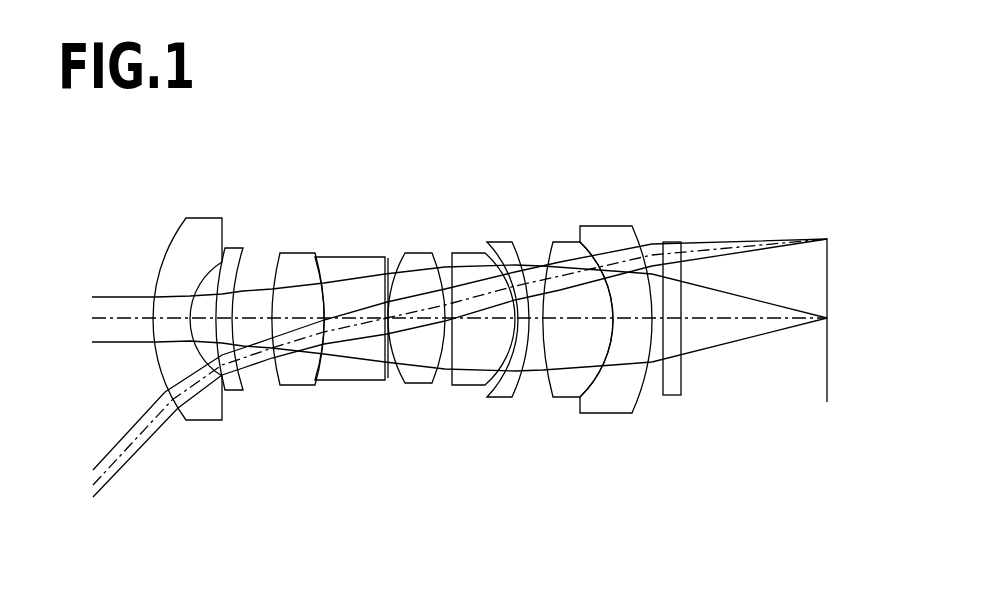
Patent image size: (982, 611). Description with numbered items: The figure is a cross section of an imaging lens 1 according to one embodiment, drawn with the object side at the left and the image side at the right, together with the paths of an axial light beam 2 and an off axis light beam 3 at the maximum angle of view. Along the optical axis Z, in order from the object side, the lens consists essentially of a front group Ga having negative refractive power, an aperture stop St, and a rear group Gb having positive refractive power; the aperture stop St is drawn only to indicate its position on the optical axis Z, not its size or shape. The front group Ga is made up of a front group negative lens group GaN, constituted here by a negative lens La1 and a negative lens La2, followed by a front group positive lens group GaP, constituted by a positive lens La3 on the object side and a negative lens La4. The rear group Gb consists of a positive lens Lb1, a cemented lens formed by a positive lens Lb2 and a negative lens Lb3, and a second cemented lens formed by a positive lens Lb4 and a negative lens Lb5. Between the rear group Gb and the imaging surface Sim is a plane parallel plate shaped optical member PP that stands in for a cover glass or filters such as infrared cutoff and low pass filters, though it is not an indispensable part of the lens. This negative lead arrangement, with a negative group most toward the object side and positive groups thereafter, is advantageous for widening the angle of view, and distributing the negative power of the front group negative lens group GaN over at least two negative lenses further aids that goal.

The imaging lens 1 is at (488, 109).
The axial light beam 2 is at (88, 285).
The off axis light beam 3 is at (88, 460).
The optical axis Z is at (104, 318).
The front group Ga is at (385, 151).
The front group negative lens group GaN is at (245, 186).
The front group positive lens group GaP is at (385, 186).
The rear group Gb is at (653, 151).
The negative lens La1 is at (202, 413).
The negative lens La2 is at (237, 392).
The positive lens La3 is at (297, 387).
The negative lens La4 is at (352, 380).
The positive lens Lb1 is at (422, 383).
The positive lens Lb2 is at (465, 387).
The negative lens Lb3 is at (500, 398).
The positive lens Lb4 is at (565, 398).
The negative lens Lb5 is at (612, 402).
The aperture stop St is at (396, 378).
The optical member PP is at (672, 395).
The imaging surface Sim is at (829, 392).